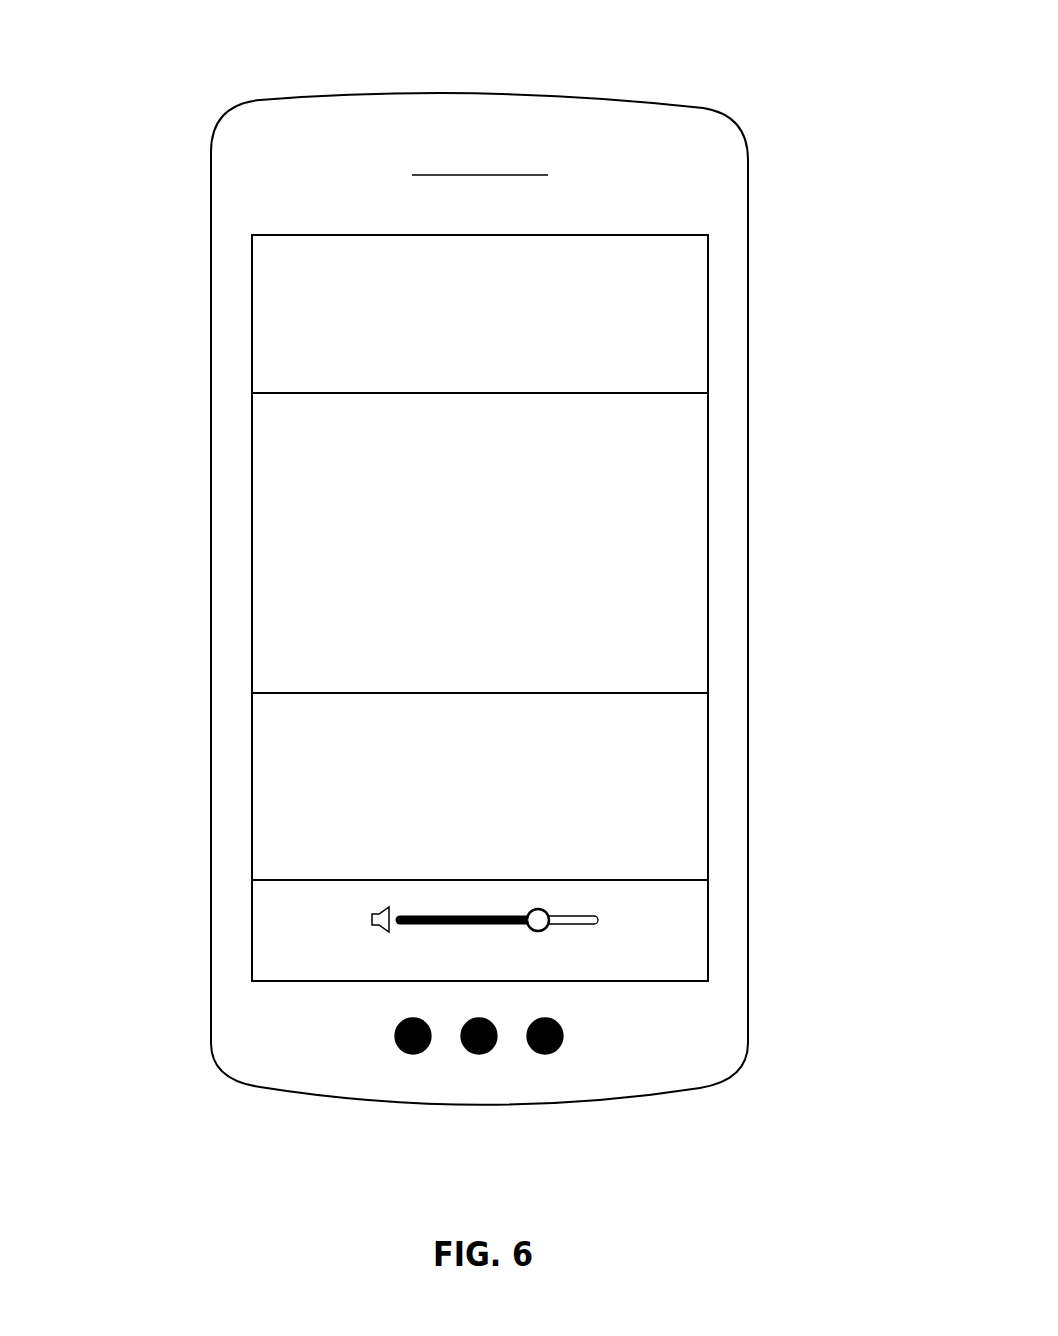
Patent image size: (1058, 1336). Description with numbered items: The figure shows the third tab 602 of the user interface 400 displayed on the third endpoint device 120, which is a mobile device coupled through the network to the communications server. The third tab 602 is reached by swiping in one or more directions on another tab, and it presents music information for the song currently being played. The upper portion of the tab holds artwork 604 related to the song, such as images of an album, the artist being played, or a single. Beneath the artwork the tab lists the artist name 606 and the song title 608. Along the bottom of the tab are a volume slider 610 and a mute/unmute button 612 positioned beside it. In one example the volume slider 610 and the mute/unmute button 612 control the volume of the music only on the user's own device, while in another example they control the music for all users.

The user interface 400 is at (88, 62).
The third endpoint device 120 is at (499, 139).
The third tab 602 is at (246, 460).
The artwork 604 is at (610, 449).
The artist name 606 is at (546, 748).
The song title 608 is at (611, 777).
The volume slider 610 is at (621, 905).
The mute/unmute button 612 is at (366, 925).